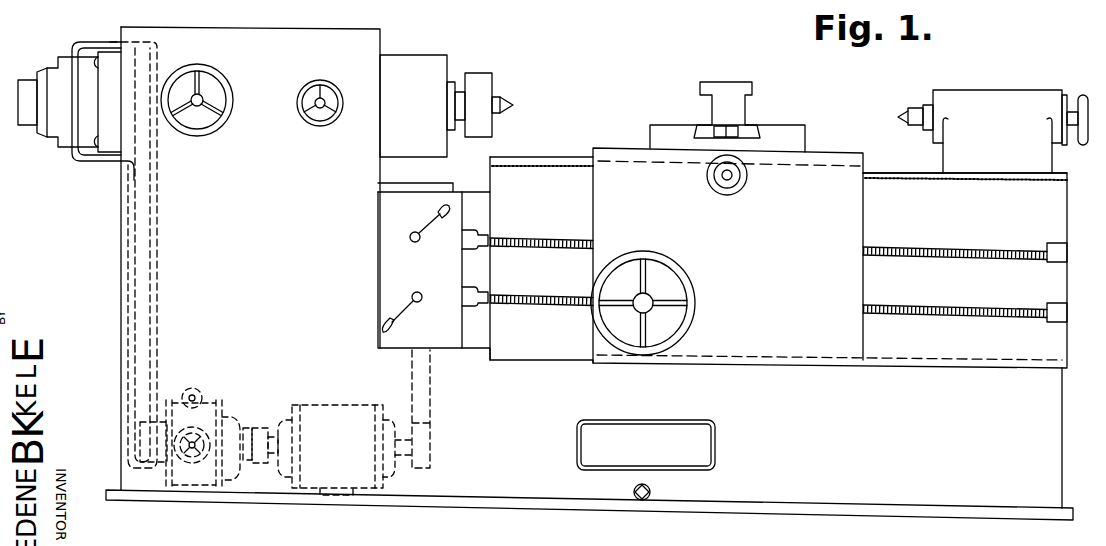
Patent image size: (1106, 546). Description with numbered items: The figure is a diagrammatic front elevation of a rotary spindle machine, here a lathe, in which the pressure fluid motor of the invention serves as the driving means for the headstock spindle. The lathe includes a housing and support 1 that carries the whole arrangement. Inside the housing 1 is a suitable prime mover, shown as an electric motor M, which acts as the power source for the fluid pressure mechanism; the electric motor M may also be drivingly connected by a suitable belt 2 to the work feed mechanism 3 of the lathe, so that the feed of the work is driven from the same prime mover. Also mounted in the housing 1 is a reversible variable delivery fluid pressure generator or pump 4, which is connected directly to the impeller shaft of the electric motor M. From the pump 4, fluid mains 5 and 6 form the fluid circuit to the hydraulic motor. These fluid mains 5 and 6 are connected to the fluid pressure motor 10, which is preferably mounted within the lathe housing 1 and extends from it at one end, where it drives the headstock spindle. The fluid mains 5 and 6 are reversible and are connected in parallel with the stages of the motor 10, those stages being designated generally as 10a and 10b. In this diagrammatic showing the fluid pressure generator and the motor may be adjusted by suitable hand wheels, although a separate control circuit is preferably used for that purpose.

The housing and support 1 is at (168, 238).
The belt 2 is at (432, 384).
The work feed mechanism 3 is at (593, 202).
The reversible variable delivery fluid pressure generator or pump 4 is at (205, 410).
The fluid main 5 is at (152, 279).
The fluid main 6 is at (133, 286).
The fluid pressure motor 10 is at (110, 58).
The stage of the motor 10a is at (182, 27).
The stage of the motor 10b is at (353, 28).
The electric motor M is at (317, 413).